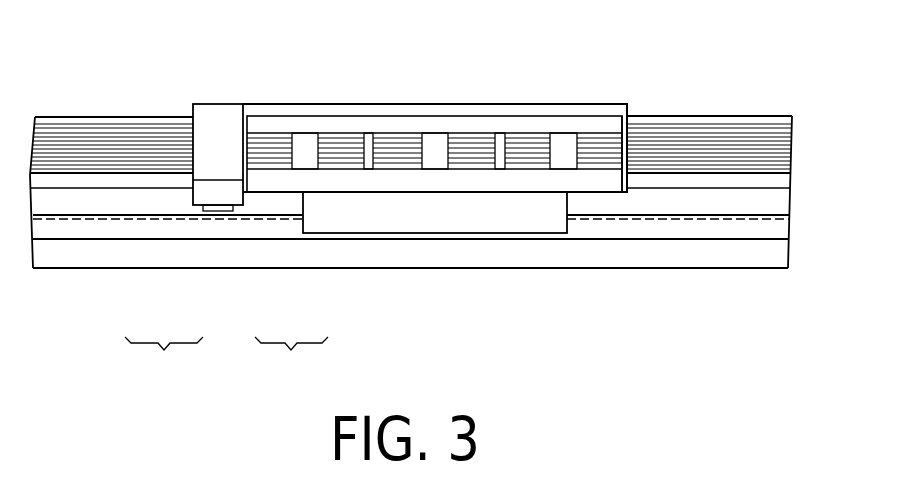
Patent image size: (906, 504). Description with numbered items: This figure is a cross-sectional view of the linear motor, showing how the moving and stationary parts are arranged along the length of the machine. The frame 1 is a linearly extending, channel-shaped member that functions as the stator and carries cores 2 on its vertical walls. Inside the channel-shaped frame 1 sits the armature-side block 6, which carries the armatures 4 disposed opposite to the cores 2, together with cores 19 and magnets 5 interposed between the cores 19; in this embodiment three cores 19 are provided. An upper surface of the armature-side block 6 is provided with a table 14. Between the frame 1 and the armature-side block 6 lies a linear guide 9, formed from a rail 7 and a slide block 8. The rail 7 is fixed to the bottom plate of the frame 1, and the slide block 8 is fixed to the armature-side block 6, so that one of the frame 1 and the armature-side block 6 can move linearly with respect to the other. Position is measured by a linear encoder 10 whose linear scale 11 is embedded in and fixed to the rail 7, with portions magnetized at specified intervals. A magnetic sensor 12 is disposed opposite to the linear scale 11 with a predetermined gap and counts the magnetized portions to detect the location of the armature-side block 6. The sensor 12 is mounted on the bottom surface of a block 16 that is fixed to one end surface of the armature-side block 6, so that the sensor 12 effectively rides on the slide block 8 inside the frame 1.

The frame 1 is at (620, 257).
The cores 2 is at (697, 145).
The armatures 4 is at (327, 133).
The magnets 5 is at (305, 143).
The armature-side block 6 is at (607, 125).
The rail 7 is at (290, 233).
The slide block 8 is at (327, 233).
The linear guide 9 is at (291, 362).
The linear encoder 10 is at (164, 362).
The linear scale 11 is at (163, 220).
The sensor 12 is at (213, 210).
The table 14 is at (398, 110).
The block 16 is at (212, 125).
The cores 19 is at (383, 142).